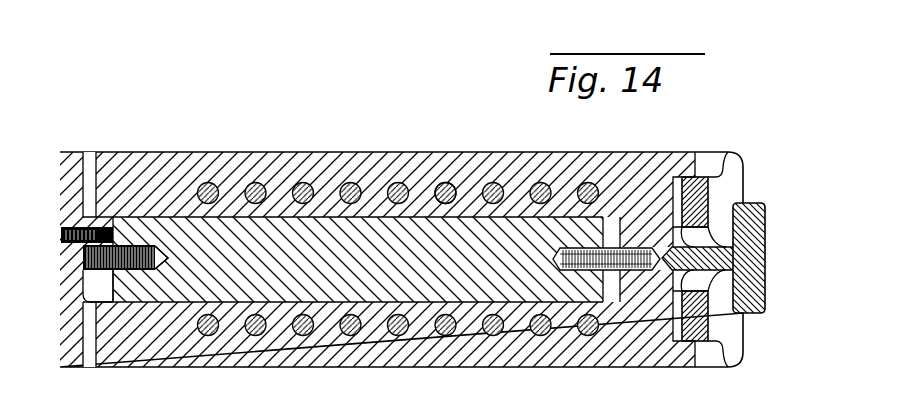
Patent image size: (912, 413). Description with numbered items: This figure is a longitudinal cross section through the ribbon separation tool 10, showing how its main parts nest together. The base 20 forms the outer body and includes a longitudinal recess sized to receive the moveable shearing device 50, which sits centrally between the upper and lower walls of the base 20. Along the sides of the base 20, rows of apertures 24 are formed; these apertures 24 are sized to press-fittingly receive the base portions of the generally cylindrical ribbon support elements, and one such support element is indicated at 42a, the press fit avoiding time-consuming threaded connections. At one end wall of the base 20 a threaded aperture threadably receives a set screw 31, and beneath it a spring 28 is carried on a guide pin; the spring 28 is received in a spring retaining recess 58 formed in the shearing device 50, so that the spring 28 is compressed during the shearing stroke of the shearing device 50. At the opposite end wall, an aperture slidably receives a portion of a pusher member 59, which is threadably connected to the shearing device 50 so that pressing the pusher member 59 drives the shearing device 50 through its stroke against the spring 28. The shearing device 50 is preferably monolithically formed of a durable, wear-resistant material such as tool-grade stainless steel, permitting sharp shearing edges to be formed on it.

The ribbon separation tool 10 is at (152, 136).
The base 20 is at (665, 152).
The apertures 24 is at (445, 190).
The spring 28 is at (84, 258).
The set screw 31 is at (62, 242).
The passage opening 42a is at (450, 184).
The moveable shearing device 50 is at (375, 249).
The spring retaining recess 58 is at (166, 254).
The pusher member 59 is at (764, 228).